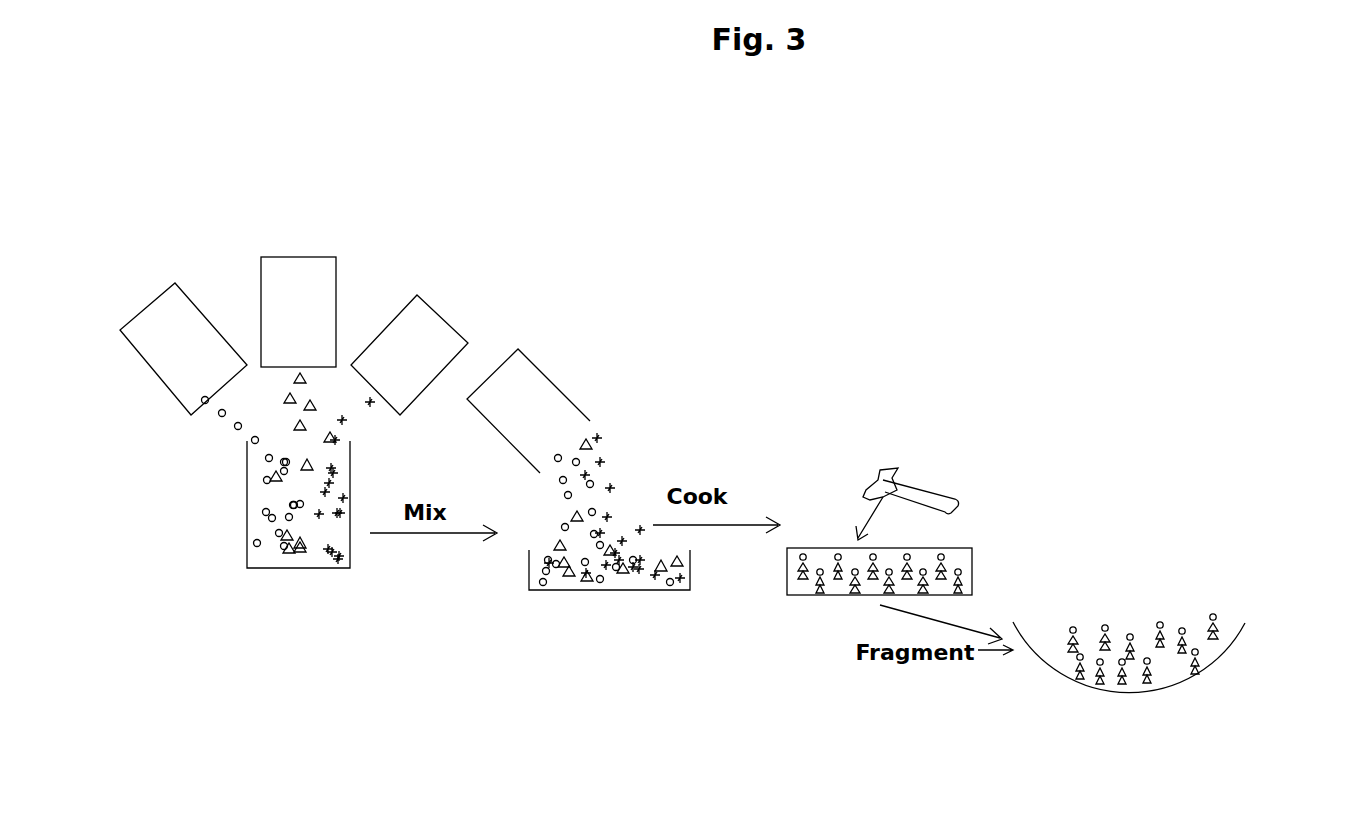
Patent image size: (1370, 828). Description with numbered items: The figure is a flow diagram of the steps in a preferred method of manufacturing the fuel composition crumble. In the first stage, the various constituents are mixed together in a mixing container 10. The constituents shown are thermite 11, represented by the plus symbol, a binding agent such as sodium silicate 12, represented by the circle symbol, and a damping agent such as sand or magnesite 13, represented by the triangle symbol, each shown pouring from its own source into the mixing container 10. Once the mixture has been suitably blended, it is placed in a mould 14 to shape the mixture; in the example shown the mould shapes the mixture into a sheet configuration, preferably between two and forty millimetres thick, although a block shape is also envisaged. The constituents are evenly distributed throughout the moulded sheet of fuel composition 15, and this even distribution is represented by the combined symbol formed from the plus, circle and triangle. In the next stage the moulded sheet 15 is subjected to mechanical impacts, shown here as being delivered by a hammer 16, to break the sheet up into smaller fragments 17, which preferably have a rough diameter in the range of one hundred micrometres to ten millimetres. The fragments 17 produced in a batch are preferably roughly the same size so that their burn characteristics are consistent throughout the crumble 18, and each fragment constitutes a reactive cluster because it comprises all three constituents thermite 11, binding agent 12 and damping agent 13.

The mixing container 10 is at (247, 513).
The thermite 11 is at (448, 315).
The binding agent 12 is at (146, 306).
The damping agent 13 is at (302, 257).
The mould 14 is at (532, 587).
The moulded sheet of fuel composition 15 is at (787, 573).
The hammer 16 is at (935, 493).
The fragments 17 is at (1208, 652).
The crumble 18 is at (1070, 635).